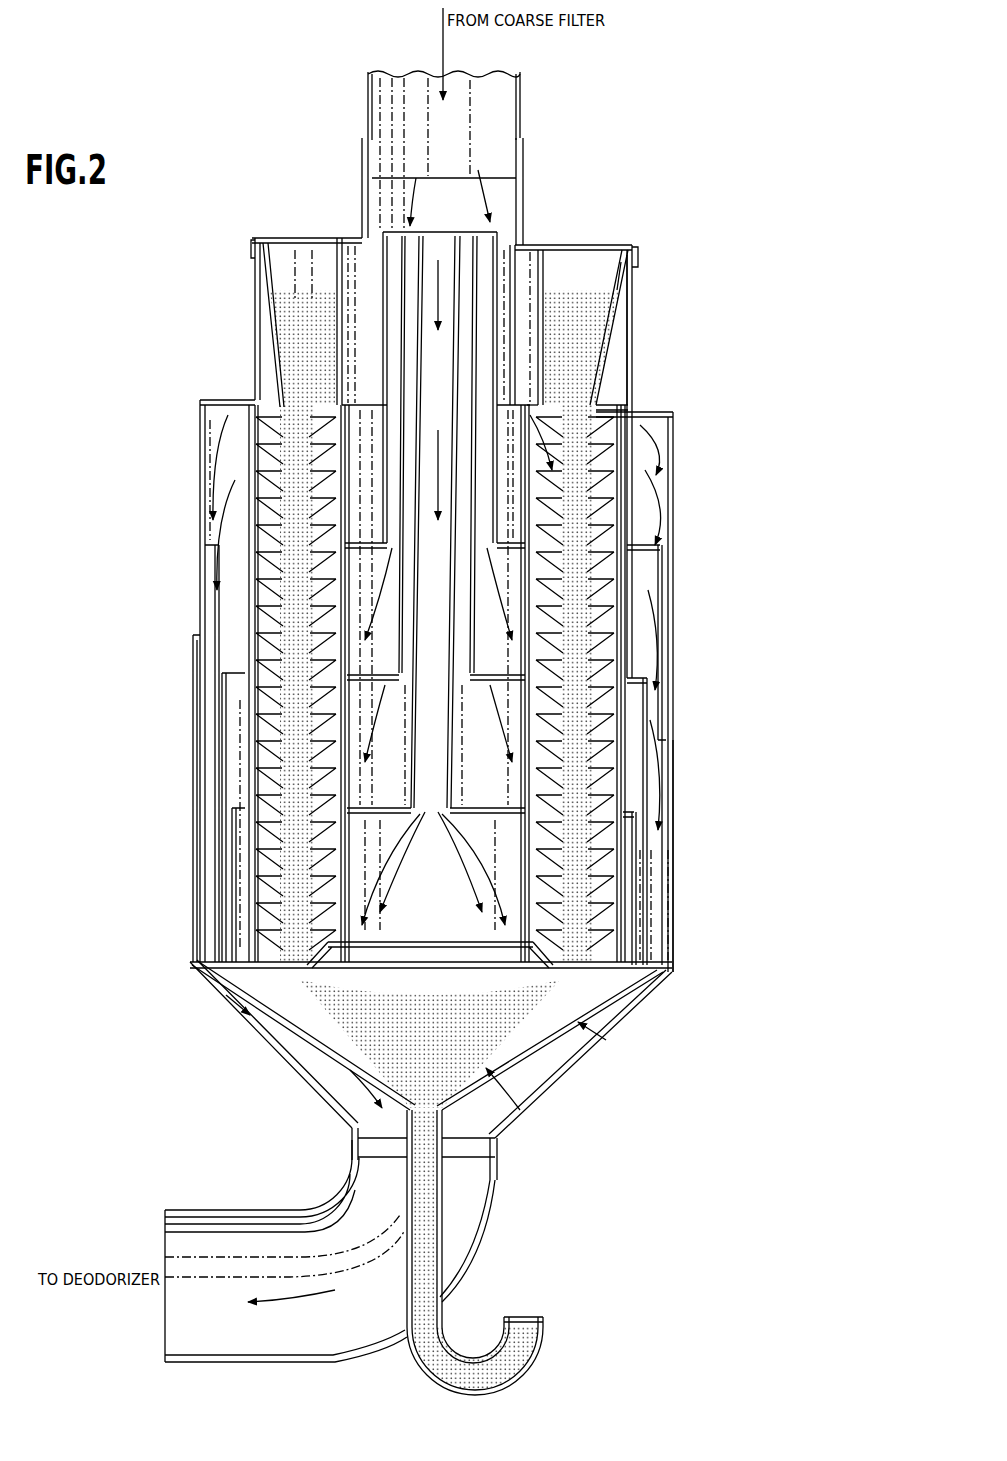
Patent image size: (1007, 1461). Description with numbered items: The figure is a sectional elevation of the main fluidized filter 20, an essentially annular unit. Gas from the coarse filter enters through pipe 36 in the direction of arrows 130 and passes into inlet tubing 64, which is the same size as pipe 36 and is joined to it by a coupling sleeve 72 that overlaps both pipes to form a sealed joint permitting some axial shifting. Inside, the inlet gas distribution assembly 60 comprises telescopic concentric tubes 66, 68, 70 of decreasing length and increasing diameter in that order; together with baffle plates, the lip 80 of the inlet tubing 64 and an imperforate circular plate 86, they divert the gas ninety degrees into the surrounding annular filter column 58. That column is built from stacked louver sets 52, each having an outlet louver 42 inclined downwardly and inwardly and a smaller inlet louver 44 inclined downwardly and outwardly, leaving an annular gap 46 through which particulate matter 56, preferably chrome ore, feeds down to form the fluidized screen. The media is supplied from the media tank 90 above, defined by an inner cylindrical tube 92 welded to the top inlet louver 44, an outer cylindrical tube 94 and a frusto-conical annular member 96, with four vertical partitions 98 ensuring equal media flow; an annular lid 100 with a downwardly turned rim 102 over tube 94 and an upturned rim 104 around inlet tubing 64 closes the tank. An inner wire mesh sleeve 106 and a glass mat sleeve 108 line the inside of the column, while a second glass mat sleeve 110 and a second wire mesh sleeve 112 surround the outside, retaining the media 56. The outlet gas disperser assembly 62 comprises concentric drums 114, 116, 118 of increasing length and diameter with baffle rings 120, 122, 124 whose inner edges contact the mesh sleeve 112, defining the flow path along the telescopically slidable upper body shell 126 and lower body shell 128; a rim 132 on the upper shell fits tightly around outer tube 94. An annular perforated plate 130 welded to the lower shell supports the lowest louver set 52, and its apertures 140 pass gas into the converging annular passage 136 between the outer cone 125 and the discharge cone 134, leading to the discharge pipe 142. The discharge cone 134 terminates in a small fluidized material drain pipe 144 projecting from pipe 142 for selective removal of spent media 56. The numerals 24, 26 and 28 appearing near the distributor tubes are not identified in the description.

The main fluidized filter 20 is at (187, 335).
The annular passage 24 is at (495, 597).
The annular passage 26 is at (481, 684).
The central tube outlet 28 is at (460, 816).
The pipe 36 is at (521, 92).
The outlet louver 42 is at (606, 398).
The inlet louver 44 is at (546, 425).
The annular gap 46 is at (576, 430).
The louver set 52 is at (271, 450).
The particulate matter 56 is at (592, 373).
The annular filter column 58 is at (578, 540).
The inlet gas distribution assembly 60 is at (502, 350).
The outlet gas disperser assembly 62 is at (668, 620).
The inlet tubing 64 is at (520, 243).
The concentric tube 66 is at (424, 236).
The concentric tube 68 is at (406, 290).
The concentric tube 70 is at (390, 331).
The coupling sleeve 72 is at (523, 162).
The lip 80 is at (515, 465).
The imperforate circular plate 86 is at (440, 949).
The media tank 90 is at (630, 330).
The inner cylindrical tube 92 is at (544, 293).
The frusto-conical annular member 96 is at (615, 288).
The outer cylindrical tube 94 is at (638, 280).
The vertical partition 98 is at (313, 241).
The annular lid 100 is at (566, 247).
The downwardly turned rim 102 is at (252, 246).
The upturned rim 104 is at (363, 238).
The inner wire mesh sleeve 106 is at (522, 667).
The glass mat sleeve 108 is at (524, 761).
The second glass mat sleeve 110 is at (622, 686).
The second wire mesh sleeve 112 is at (628, 779).
The concentric drum 114 is at (634, 921).
The concentric drum 116 is at (646, 899).
The concentric drum 118 is at (656, 883).
The baffle ring 120 is at (628, 807).
The baffle ring 122 is at (649, 669).
The baffle ring 124 is at (650, 547).
The outer cone 125 is at (530, 1112).
The upper body shell 126 is at (672, 470).
The lower body shell 128 is at (675, 763).
The annular perforated plate 130 is at (443, 66).
The rim 132 is at (662, 412).
The discharge cone 134 is at (517, 1046).
The converging annular passage 136 is at (598, 1042).
The apertures 140 is at (195, 965).
The discharge pipe 142 is at (342, 1363).
The fluidized material drain pipe 144 is at (443, 1322).